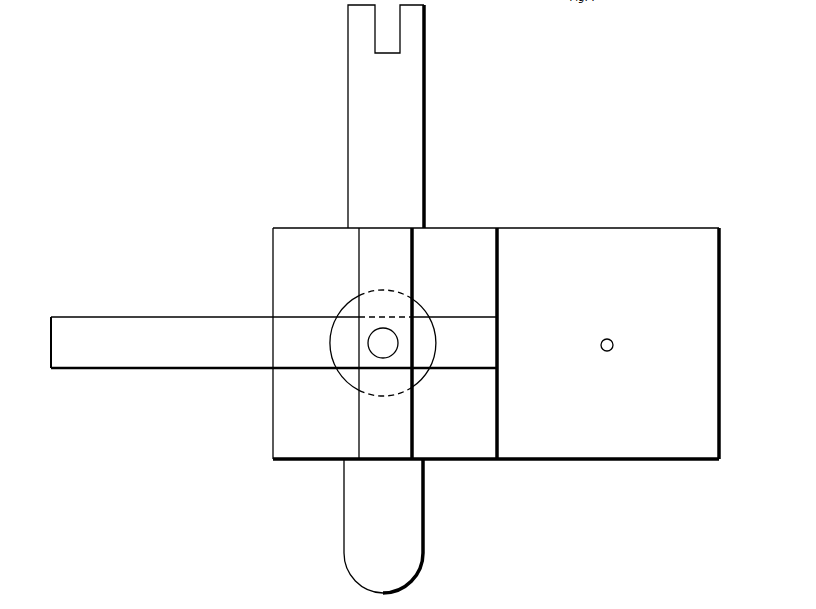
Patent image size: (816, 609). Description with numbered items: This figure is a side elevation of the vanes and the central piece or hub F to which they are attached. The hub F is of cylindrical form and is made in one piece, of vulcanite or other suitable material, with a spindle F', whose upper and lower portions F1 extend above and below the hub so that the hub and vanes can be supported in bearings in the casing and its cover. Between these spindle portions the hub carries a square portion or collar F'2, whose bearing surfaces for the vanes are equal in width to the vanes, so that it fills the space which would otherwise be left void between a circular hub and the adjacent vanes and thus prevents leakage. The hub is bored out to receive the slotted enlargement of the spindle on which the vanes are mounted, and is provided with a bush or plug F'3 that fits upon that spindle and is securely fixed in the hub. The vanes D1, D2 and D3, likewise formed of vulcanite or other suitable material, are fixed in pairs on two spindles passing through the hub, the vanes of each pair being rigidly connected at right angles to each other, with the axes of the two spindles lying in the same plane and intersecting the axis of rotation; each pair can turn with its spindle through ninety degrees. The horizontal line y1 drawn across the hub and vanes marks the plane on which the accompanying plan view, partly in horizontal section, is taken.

The spindle F1 is at (384, 299).
The vane D2 is at (496, 343).
The vane D1 is at (555, 343).
The vane D3 is at (274, 342).
The square portion or collar F'2 is at (392, 343).
The spindle F' is at (459, 261).
The bush or plug F'3 is at (446, 299).
The central piece or hub F is at (311, 417).
The section line y'y' y1 is at (695, 345).